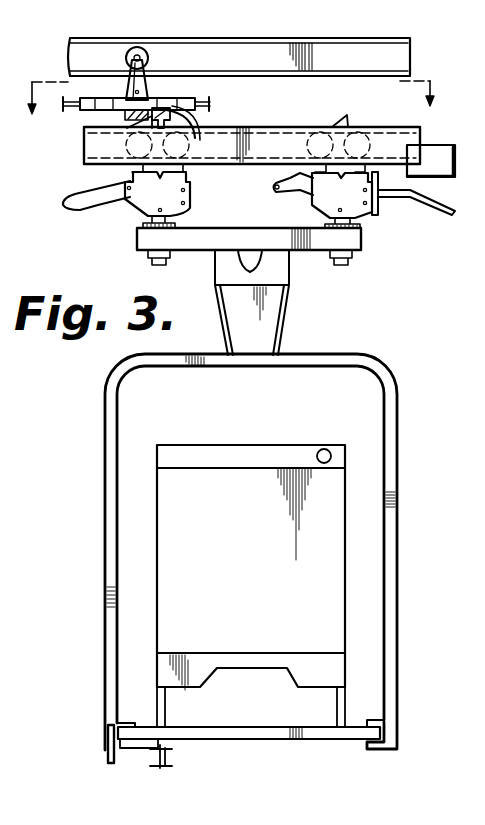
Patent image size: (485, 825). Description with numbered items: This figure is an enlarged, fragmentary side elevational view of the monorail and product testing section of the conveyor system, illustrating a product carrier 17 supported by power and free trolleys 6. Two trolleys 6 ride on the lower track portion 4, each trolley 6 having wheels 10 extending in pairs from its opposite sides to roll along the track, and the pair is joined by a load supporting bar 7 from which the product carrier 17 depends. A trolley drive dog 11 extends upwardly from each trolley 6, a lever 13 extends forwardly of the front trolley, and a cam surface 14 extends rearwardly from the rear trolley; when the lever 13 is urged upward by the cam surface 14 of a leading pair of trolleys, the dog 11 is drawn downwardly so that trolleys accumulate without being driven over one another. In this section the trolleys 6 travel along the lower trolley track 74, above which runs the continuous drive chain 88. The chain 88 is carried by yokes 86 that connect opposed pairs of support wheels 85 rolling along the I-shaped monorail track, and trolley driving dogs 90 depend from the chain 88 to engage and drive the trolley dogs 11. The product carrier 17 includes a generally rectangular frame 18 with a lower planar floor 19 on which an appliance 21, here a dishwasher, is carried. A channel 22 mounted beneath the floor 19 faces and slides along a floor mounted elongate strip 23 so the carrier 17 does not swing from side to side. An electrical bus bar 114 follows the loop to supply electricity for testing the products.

The first lower track portion 4 is at (234, 81).
The power and free trolley 6 is at (190, 197).
The load supporting bar 7 is at (307, 250).
The wheel 10 is at (369, 136).
The trolley drive dog 11 is at (172, 106).
The lever 13 is at (86, 204).
The cam surface 14 is at (432, 205).
The product carrier 17 is at (398, 392).
The frame 18 is at (398, 583).
The floor 19 is at (254, 714).
The appliance 21 is at (263, 445).
The channel 22 is at (130, 751).
The floor mounted elongate strip 23 is at (170, 760).
The lower trolley track 74 is at (288, 127).
The support wheel 85 is at (142, 52).
The yoke 86 is at (142, 66).
The drive chain 88 is at (80, 110).
The trolley driving dog 90 is at (177, 130).
The electrical bus bar 114 is at (434, 148).